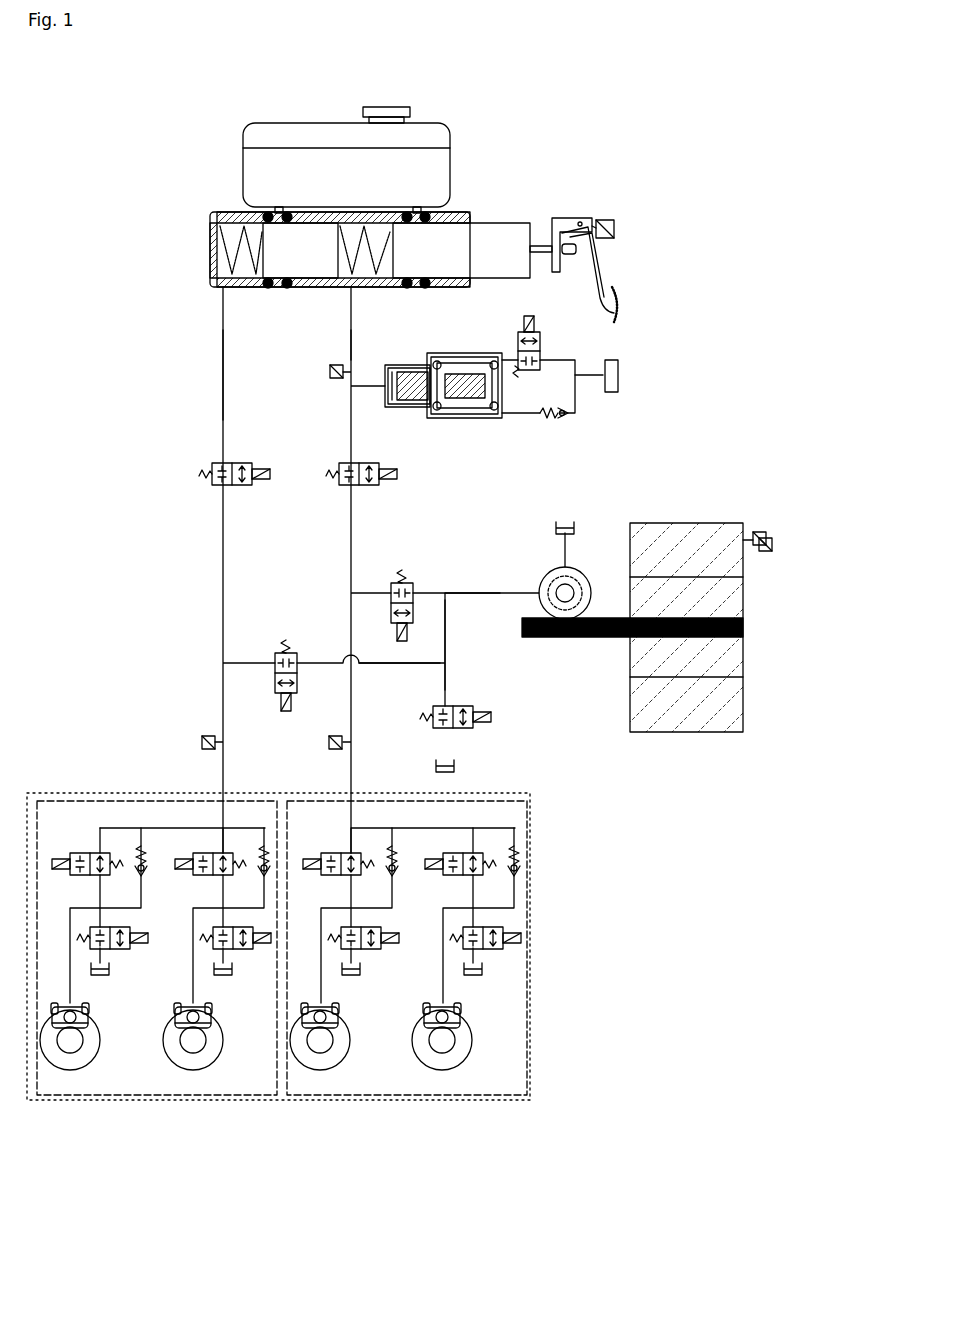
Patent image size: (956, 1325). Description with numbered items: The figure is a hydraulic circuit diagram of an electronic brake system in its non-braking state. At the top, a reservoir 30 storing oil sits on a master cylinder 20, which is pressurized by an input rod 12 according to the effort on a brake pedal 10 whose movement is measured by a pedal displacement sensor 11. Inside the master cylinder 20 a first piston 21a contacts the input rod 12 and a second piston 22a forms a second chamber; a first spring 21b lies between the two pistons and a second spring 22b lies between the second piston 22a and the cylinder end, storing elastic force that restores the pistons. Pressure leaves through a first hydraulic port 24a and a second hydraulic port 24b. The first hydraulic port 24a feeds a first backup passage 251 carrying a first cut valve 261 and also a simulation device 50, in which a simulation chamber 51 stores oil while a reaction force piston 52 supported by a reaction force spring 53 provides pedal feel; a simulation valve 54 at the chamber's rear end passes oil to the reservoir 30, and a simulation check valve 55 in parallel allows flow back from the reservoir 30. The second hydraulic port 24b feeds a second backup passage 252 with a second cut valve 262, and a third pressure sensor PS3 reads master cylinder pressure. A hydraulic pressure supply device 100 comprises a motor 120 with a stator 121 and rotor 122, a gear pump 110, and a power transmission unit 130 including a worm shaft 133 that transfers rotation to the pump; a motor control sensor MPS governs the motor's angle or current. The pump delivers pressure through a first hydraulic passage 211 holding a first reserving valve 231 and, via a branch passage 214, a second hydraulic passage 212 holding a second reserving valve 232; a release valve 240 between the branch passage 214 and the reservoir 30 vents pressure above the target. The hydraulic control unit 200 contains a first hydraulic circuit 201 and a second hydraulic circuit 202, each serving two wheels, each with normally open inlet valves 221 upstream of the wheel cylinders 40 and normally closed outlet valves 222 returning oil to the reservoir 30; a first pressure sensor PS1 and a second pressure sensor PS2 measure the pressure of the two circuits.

The brake pedal 10 is at (596, 256).
The pedal displacement sensor 11 is at (608, 220).
The input rod 12 is at (541, 245).
The master cylinder 20 is at (341, 245).
The first piston 21a is at (507, 222).
The first spring 21b is at (372, 266).
The second piston 22a is at (279, 284).
The second spring 22b is at (217, 250).
The first hydraulic port 24a is at (342, 284).
The second hydraulic port 24b is at (215, 284).
The reservoir 30 is at (276, 122).
The wheel cylinder 40 is at (88, 1018).
The simulation device 50 is at (487, 368).
The simulation chamber 51 is at (467, 352).
The reaction force piston 52 is at (410, 365).
The reaction force spring 53 is at (438, 360).
The simulation valve 54 is at (541, 334).
The simulation check valve 55 is at (556, 420).
The hydraulic pressure supply device 100 is at (679, 611).
The gear pump 110 is at (574, 566).
The motor 120 is at (791, 681).
The stator 121 is at (745, 700).
The rotor 122 is at (745, 655).
The power transmission unit 130 is at (679, 600).
The worm shaft 133 is at (745, 628).
The hydraulic control unit 200 is at (278, 984).
The first hydraulic circuit 201 is at (350, 1100).
The second hydraulic circuit 202 is at (238, 1100).
The first hydraulic passage 211 is at (482, 590).
The second hydraulic passage 212 is at (396, 666).
The branch passage 214 is at (448, 628).
The inlet valve 221 is at (104, 877).
The outlet valve 222 is at (130, 950).
The first reserving valve 231 is at (414, 586).
The second reserving valve 232 is at (280, 650).
The release valve 240 is at (468, 706).
The first backup passage 251 is at (351, 342).
The second backup passage 252 is at (223, 372).
The first cut valve 261 is at (367, 463).
The second cut valve 262 is at (206, 474).
The first pressure sensor PS1 is at (329, 744).
The second pressure sensor PS2 is at (205, 738).
The third pressure sensor PS3 is at (330, 372).
The motor control sensor MPS is at (768, 556).